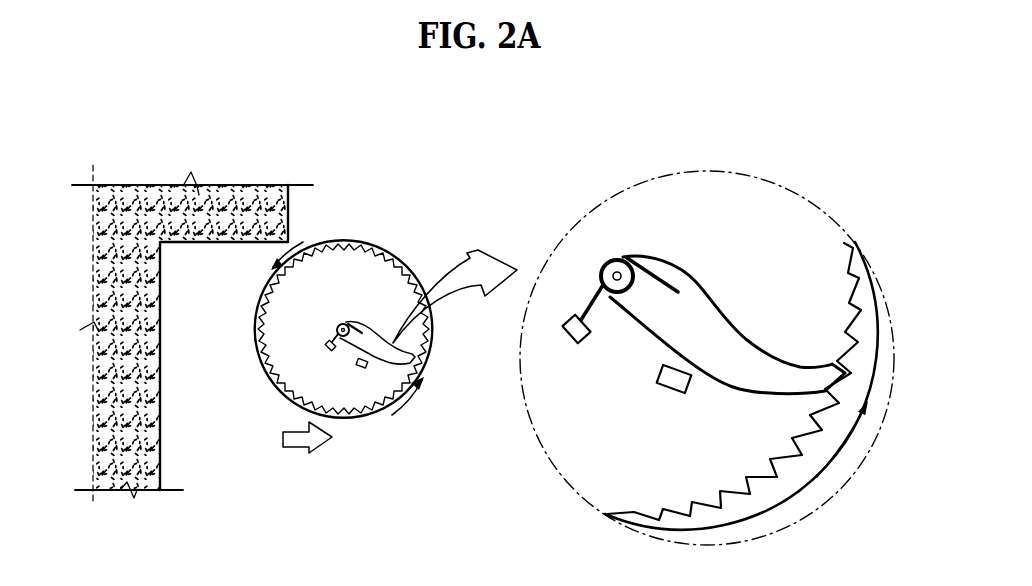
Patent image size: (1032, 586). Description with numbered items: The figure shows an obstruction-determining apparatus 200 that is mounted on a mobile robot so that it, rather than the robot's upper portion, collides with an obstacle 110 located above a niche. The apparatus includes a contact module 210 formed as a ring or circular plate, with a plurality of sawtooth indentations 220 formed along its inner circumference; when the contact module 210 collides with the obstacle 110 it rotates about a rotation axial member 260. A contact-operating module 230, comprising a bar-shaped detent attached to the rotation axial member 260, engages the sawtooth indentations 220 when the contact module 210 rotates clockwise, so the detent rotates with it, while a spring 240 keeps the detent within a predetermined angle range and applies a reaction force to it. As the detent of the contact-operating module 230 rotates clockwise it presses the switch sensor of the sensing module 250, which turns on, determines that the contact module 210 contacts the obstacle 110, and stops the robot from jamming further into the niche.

The obstacle 110 is at (205, 192).
The obstruction-determining apparatus 200 is at (344, 288).
The contact module 210 is at (345, 416).
The sawtooth indentations 220 is at (786, 472).
The contact-operating module 230 is at (706, 300).
The spring 240 is at (656, 264).
The sensing module 250 is at (662, 385).
The rotation axial member 260 is at (613, 257).